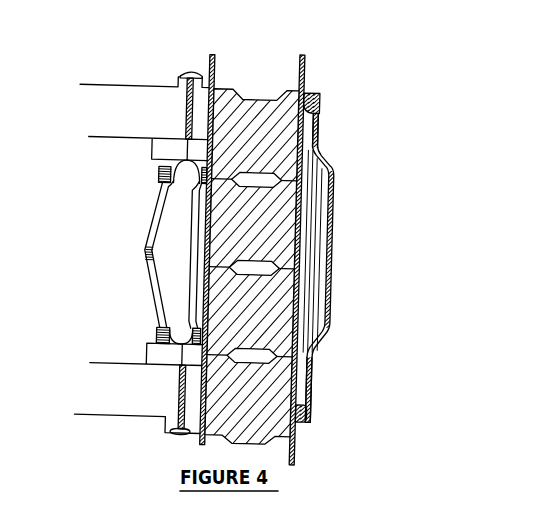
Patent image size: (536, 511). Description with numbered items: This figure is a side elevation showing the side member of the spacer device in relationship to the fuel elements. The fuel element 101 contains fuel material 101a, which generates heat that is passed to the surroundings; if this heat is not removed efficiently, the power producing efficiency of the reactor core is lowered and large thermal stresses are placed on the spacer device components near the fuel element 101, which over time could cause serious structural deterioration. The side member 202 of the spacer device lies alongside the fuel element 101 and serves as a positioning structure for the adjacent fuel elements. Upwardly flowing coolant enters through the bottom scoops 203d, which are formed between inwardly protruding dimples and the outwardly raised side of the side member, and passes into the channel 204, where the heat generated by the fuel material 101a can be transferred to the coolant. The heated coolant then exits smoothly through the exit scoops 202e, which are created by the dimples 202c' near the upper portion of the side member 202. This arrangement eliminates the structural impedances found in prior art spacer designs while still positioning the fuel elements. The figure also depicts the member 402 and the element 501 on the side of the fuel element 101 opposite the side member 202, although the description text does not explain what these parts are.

The fuel element 101 is at (305, 80).
The fuel material 101a is at (275, 90).
The mounting frame member 402 is at (121, 86).
The spring clip 501 is at (155, 243).
The side member 202 is at (338, 243).
The dimple 202c' is at (346, 104).
The exit scoop 202e is at (318, 116).
The channel 204 is at (307, 204).
The bottom scoop 203d is at (308, 352).